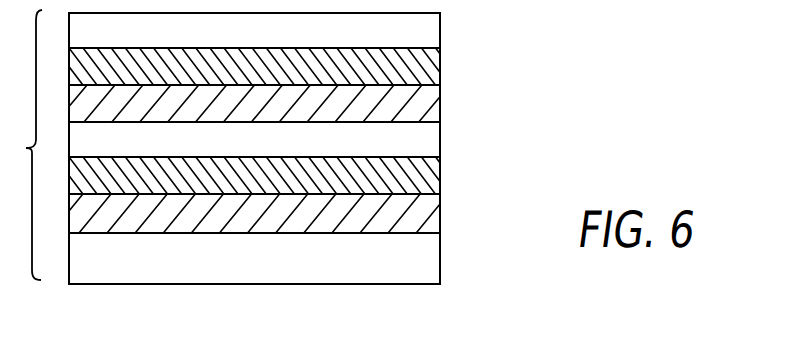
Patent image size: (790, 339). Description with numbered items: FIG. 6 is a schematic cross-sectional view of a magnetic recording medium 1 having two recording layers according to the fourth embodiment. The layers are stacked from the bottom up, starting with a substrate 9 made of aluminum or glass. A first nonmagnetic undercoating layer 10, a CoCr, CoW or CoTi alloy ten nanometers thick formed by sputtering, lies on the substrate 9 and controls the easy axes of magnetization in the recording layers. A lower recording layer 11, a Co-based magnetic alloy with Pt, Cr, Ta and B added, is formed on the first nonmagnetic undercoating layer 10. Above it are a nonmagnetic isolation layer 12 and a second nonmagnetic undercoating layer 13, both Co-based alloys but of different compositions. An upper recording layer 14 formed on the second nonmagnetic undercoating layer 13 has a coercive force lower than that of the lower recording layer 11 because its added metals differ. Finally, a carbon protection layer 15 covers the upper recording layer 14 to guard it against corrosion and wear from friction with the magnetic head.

The multilayer structure 1 is at (26, 145).
The substrate 9 is at (440, 255).
The first nonmagnetic undercoating layer 10 is at (440, 218).
The lower recording layer 11 is at (440, 176).
The nonmagnetic isolation layer 12 is at (440, 141).
The second nonmagnetic undercoating layer 13 is at (440, 103).
The upper recording layer 14 is at (440, 68).
The carbon protection layer 15 is at (440, 30).